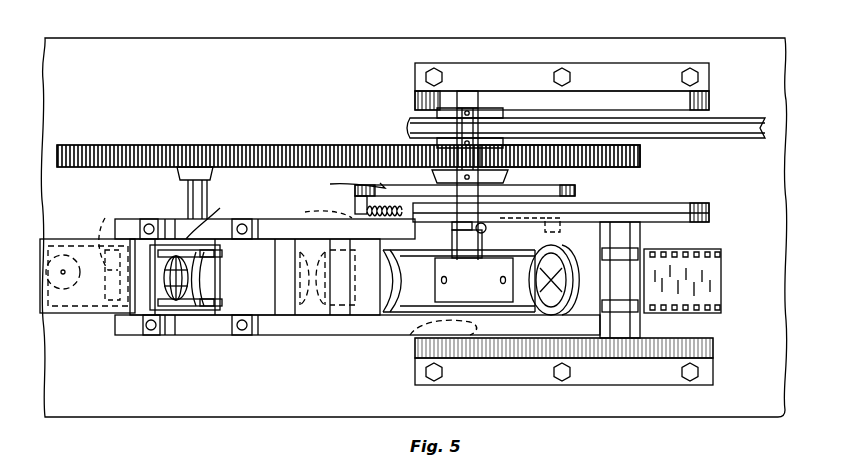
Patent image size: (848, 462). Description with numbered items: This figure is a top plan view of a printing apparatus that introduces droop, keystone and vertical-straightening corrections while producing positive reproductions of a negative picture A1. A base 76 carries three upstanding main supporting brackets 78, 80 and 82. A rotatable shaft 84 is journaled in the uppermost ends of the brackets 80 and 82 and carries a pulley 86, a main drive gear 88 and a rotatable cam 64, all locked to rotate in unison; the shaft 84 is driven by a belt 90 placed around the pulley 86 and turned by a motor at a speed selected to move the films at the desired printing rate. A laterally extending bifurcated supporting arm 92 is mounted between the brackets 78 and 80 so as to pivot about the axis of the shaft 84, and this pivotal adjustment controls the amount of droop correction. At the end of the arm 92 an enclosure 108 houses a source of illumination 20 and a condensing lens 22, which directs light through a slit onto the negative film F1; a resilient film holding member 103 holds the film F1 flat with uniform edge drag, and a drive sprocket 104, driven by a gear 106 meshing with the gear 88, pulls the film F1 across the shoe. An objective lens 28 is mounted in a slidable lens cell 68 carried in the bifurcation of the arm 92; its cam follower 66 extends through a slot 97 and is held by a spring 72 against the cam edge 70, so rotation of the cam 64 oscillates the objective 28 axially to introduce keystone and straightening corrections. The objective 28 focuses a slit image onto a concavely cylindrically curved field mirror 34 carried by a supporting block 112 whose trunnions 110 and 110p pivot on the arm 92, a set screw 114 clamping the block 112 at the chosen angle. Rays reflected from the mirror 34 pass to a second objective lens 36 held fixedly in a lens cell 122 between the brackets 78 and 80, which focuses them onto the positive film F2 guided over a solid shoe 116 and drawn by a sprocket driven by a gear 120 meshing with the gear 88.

The source of illumination 20 is at (66, 314).
The condensing lens 22 is at (155, 233).
The objective lens 28 is at (300, 316).
The concavely cylindrically curved field mirror 34 is at (400, 276).
The objective lens 36 is at (548, 318).
The rotatable cam 64 is at (576, 189).
The cam follower 66 is at (356, 205).
The lens cell 68 is at (325, 316).
The cam edge 70 is at (348, 182).
The spring 72 is at (398, 196).
The base 76 is at (708, 412).
The main supporting bracket 78 is at (645, 352).
The main supporting bracket 80 is at (676, 212).
The main supporting bracket 82 is at (632, 92).
The rotatable shaft 84 is at (468, 92).
The pulley 86 is at (416, 122).
The main drive gear 88 is at (393, 146).
The belt 90 is at (747, 124).
The bifurcated supporting arm 92 is at (252, 336).
The slot 97 is at (305, 214).
The film holding member 103 is at (135, 316).
The drive sprocket 104 is at (215, 252).
The gear 106 is at (299, 146).
The enclosure 108 is at (68, 240).
The trunnion 110 is at (412, 333).
The trunnion 110p is at (500, 222).
The supporting block 112 is at (435, 292).
The set screw 114 is at (488, 228).
The shoe 116 is at (640, 240).
The gear 120 is at (641, 156).
The lens cell 122 is at (572, 305).
The negative picture A1 is at (178, 316).
The negative film F1 is at (221, 207).
The positive film F2 is at (722, 280).